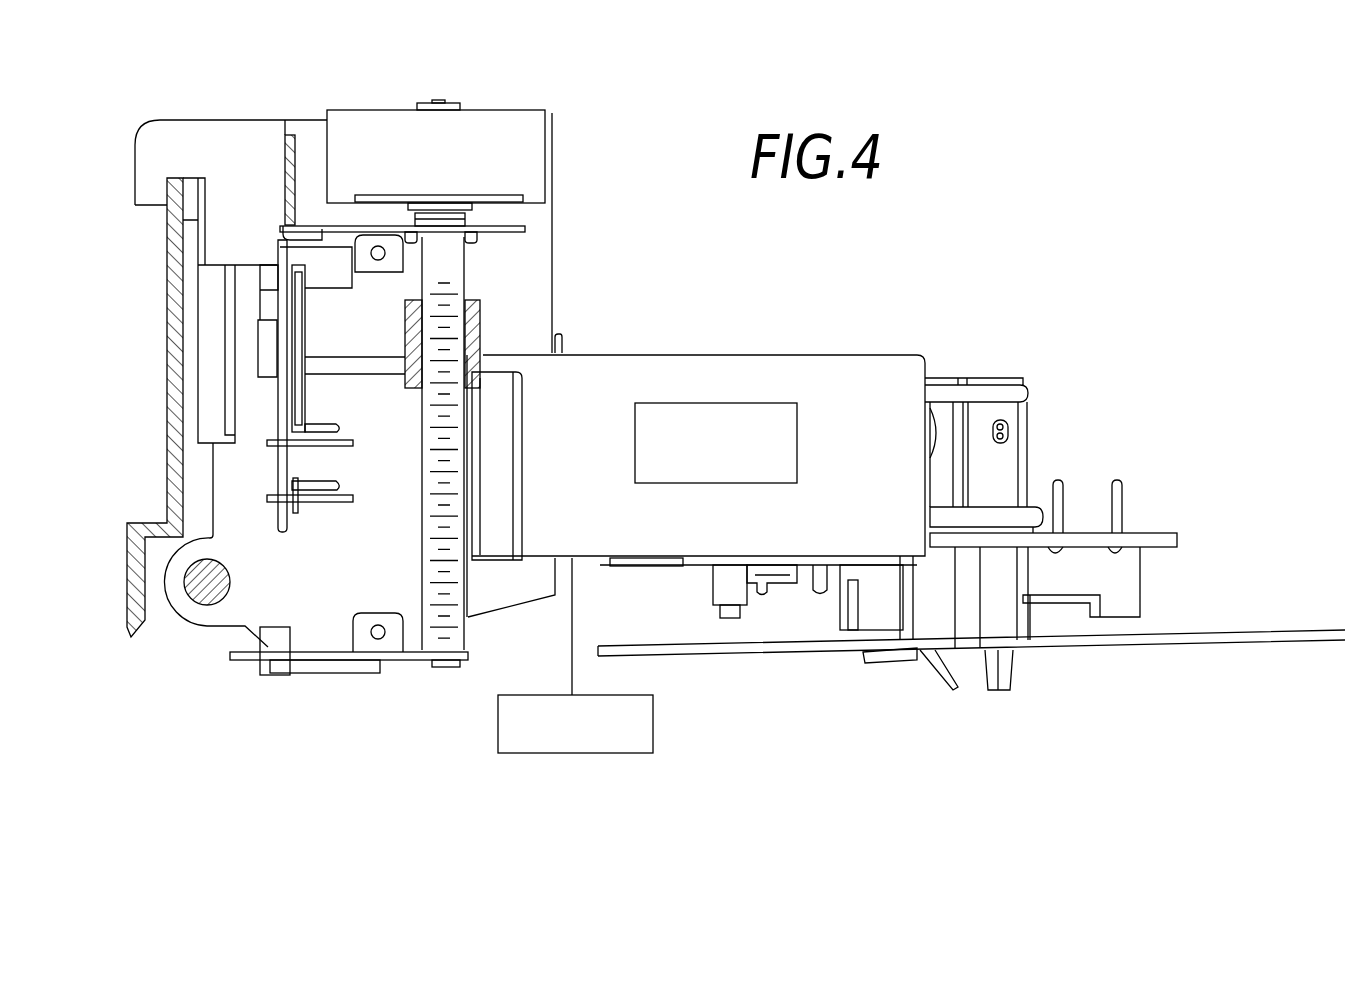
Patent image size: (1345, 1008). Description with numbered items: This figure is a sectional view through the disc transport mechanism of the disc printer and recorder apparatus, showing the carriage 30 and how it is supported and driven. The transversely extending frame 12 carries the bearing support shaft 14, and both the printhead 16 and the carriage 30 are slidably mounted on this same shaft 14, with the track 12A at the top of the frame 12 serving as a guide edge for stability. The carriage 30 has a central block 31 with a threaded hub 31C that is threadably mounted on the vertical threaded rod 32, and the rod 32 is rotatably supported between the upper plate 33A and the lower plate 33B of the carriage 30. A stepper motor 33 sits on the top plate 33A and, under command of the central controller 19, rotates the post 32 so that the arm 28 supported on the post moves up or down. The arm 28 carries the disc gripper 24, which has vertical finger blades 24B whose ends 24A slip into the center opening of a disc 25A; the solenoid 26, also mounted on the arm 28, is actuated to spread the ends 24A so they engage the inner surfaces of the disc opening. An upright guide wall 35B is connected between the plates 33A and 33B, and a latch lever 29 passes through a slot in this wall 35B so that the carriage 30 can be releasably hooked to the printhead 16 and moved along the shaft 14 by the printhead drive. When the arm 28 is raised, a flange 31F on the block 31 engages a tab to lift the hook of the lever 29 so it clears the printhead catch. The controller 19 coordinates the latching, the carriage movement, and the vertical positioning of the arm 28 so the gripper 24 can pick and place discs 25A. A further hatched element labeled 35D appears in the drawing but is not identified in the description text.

The frame 12 is at (172, 455).
The track 12A is at (231, 168).
The bearing support shaft 14 is at (233, 578).
The printhead 16 is at (520, 300).
The central controller 19 is at (577, 755).
The disc gripper 24 is at (1042, 456).
The blade ends 24A is at (987, 682).
The vertical finger blades 24B is at (997, 376).
The disc 25A is at (1183, 647).
The solenoid 26 is at (737, 484).
The arm 28 is at (796, 368).
The latch lever 29 is at (283, 165).
The carriage 30 is at (322, 635).
The central block 31 is at (480, 303).
The threaded hub 31C is at (405, 313).
The flange 31F is at (317, 223).
The threaded rod 32 is at (452, 580).
The stepper motor 33 is at (488, 133).
The upper plate 33A is at (500, 223).
The lower plate 33B is at (413, 655).
The upright guide wall 35B is at (255, 125).
The housing side bracket 35D is at (297, 135).